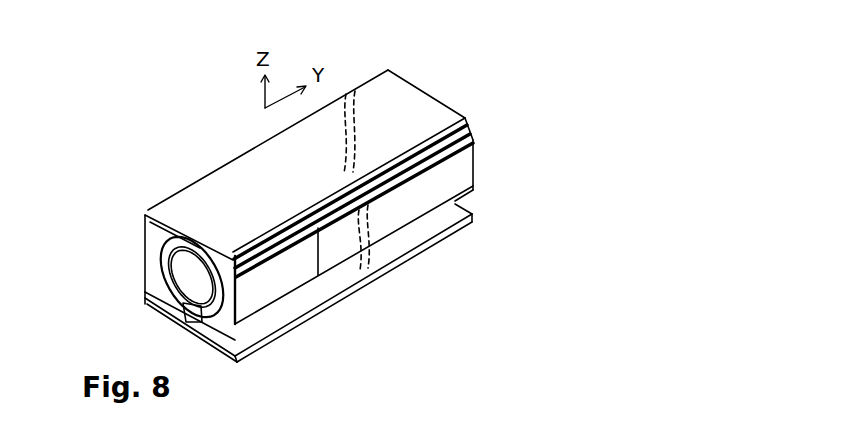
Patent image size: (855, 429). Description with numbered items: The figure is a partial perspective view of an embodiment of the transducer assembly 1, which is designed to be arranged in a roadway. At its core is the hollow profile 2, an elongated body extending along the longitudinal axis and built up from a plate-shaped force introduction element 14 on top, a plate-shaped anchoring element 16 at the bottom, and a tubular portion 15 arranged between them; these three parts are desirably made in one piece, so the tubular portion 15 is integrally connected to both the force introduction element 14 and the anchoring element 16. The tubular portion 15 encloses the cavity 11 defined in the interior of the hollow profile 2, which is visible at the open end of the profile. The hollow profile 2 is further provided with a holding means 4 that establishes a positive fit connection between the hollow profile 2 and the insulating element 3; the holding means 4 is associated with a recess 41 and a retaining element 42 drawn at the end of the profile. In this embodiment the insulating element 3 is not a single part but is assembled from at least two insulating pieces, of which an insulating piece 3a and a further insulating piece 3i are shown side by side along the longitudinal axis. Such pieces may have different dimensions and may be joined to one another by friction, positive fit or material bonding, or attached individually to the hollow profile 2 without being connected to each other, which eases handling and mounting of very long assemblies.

The transducer assembly 1 is at (150, 105).
The hollow profile 2 is at (256, 126).
The insulating element 3 is at (515, 287).
The insulating piece 3a is at (155, 243).
The insulating piece 3i is at (380, 220).
The holding means 4 is at (148, 248).
The cavity 11 is at (192, 267).
The force introduction element 14 is at (400, 115).
The tubular portion 15 is at (175, 312).
The anchoring element 16 is at (266, 341).
The recess 41 is at (203, 238).
The retaining element 42 is at (152, 215).